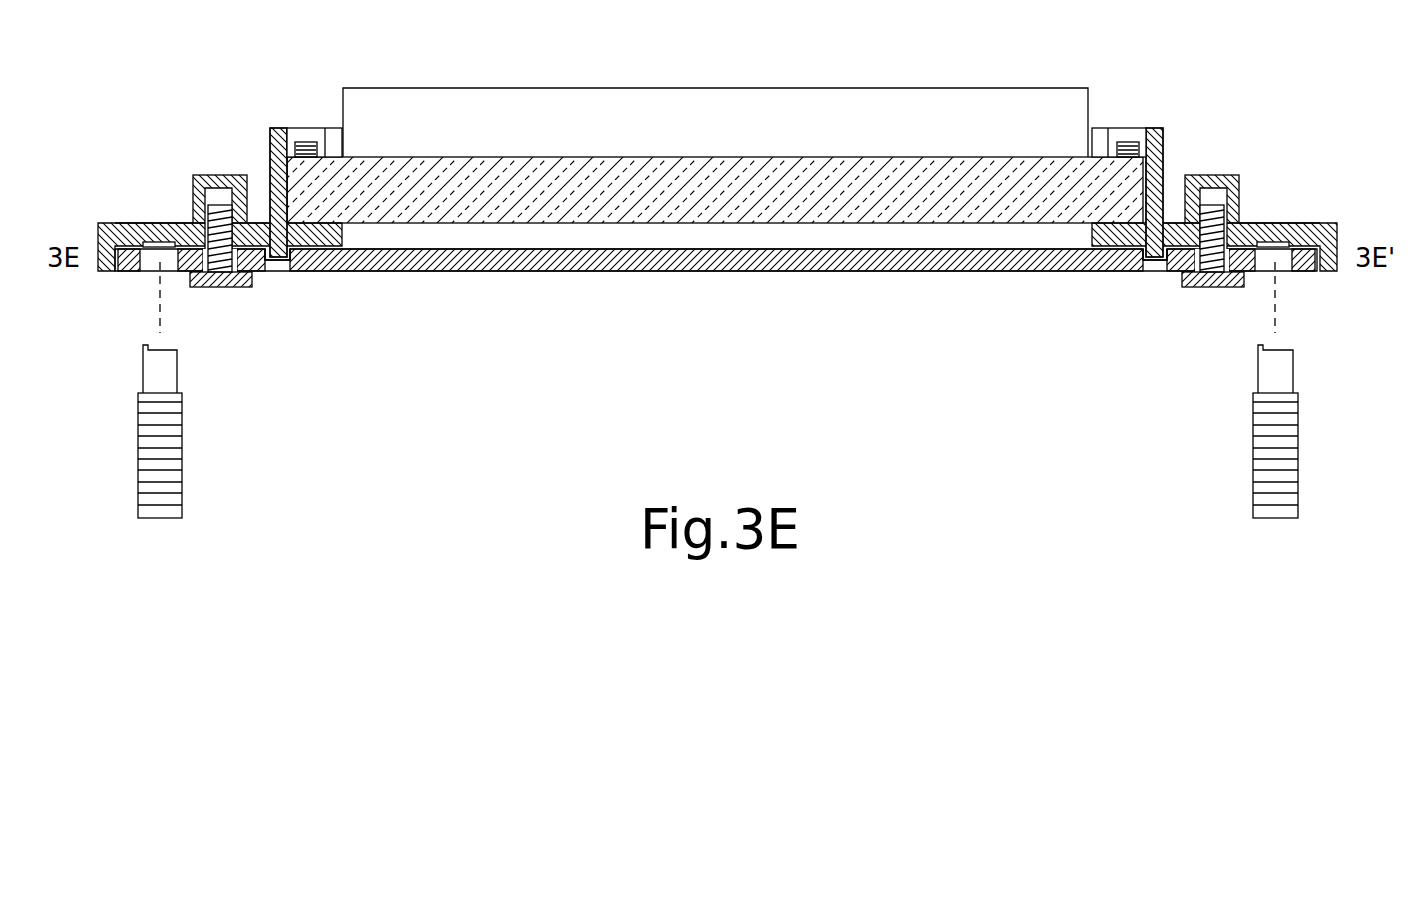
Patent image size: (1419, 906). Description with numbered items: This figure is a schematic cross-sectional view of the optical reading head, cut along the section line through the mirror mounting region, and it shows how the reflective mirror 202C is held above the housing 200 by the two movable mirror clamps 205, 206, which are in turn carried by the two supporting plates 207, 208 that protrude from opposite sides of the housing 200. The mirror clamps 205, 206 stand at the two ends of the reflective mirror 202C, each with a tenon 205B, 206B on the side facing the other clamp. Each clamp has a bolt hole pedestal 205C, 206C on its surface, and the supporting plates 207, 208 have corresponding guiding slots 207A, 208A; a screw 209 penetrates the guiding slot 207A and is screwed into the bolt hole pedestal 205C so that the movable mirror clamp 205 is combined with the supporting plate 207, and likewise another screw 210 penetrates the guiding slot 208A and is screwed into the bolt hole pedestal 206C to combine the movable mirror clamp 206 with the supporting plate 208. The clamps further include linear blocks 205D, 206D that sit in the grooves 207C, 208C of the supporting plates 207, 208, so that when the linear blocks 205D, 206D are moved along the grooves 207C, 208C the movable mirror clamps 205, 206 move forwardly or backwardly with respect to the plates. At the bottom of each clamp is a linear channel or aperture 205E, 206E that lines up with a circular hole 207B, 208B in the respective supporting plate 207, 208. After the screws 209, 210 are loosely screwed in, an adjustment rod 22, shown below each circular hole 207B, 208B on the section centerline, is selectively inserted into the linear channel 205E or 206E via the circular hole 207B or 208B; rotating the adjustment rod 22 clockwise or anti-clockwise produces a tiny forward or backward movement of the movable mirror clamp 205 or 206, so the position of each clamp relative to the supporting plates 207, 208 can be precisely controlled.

The adjustment rod 22 is at (138, 432).
The housing 200 is at (897, 257).
The reflective mirror 202C is at (607, 200).
The movable mirror clamp 205 is at (305, 128).
The tenon 205B is at (305, 142).
The bolt hole pedestal 205C is at (222, 175).
The linear block 205D is at (270, 217).
The linear channel 205E is at (150, 223).
The movable mirror clamp 206 is at (1122, 128).
The tenon 206B is at (1127, 143).
The bolt hole pedestal 206C is at (1210, 177).
The linear block 206D is at (1165, 217).
The linear channel 206E is at (1282, 225).
The supporting plate 207 is at (269, 272).
The guiding slot 207A is at (192, 223).
The circular hole 207B is at (122, 272).
The groove 207C is at (272, 265).
The supporting plate 208 is at (1167, 270).
The guiding slot 208A is at (1238, 225).
The circular hole 208B is at (1313, 270).
The groove 208C is at (1153, 263).
The screw 209 is at (222, 272).
The screw 210 is at (1222, 285).